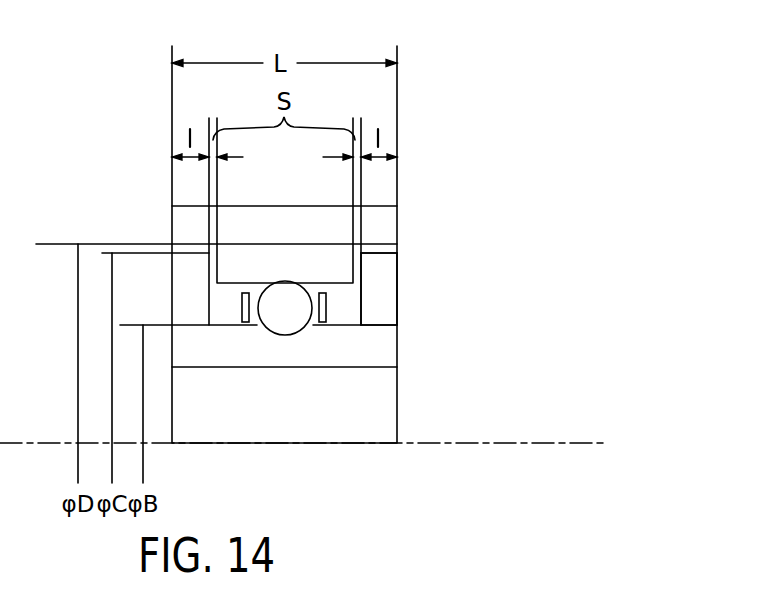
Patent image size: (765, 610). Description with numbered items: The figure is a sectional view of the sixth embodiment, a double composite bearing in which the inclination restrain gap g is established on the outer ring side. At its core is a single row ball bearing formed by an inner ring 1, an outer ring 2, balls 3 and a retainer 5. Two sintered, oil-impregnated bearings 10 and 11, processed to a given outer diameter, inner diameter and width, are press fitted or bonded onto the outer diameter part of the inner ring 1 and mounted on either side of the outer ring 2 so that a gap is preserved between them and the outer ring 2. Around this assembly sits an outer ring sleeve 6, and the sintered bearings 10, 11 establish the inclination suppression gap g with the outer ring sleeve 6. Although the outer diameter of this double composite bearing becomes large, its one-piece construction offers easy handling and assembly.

The inner ring 1 is at (383, 350).
The outer ring 2 is at (307, 255).
The balls 3 is at (280, 328).
The retainer 5 is at (323, 321).
The outer ring sleeve 6 is at (185, 228).
The sintered, oil-impregnated bearing 10 is at (187, 312).
The sintered, oil-impregnated bearing 11 is at (385, 280).
The inclination restrain gap g is at (126, 249).